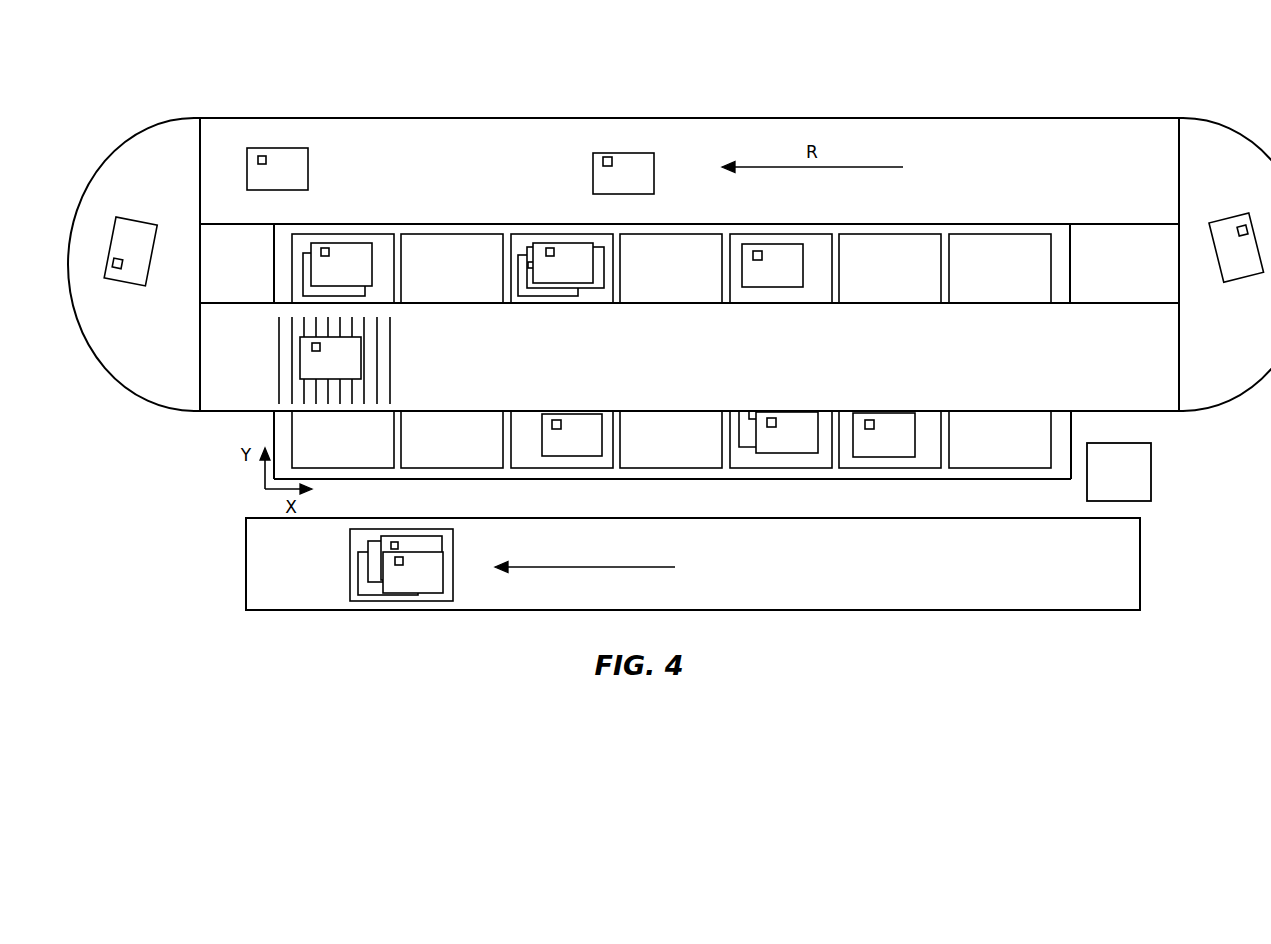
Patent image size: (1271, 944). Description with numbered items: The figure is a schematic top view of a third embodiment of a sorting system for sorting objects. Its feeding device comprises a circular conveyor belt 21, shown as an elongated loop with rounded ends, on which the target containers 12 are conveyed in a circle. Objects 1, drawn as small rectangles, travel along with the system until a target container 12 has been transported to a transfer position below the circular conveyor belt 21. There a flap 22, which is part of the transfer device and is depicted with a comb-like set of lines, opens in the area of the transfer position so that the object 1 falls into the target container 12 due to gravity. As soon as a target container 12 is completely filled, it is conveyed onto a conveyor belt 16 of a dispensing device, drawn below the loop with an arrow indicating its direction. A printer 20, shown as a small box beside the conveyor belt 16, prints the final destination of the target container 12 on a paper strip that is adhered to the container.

The object 1 is at (277, 148).
The target container 12 is at (1051, 248).
The conveyor belt 16 is at (1140, 525).
The printer 20 is at (1151, 468).
The circular conveyor belt 21 is at (132, 137).
The flap 22 is at (273, 385).